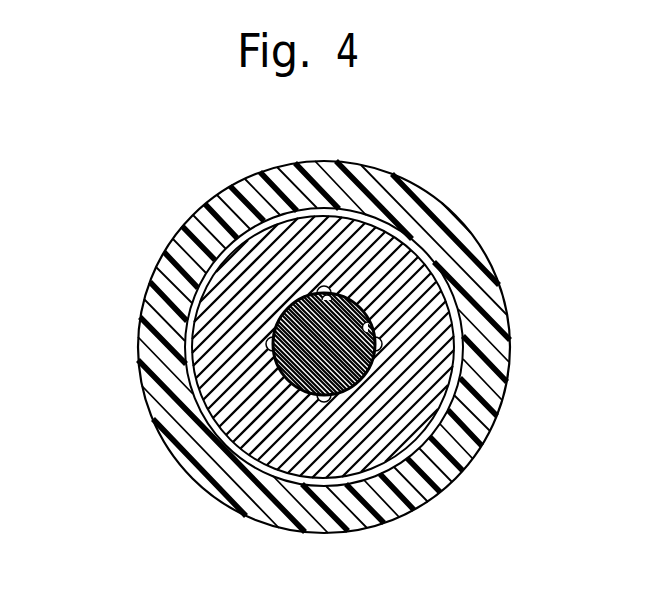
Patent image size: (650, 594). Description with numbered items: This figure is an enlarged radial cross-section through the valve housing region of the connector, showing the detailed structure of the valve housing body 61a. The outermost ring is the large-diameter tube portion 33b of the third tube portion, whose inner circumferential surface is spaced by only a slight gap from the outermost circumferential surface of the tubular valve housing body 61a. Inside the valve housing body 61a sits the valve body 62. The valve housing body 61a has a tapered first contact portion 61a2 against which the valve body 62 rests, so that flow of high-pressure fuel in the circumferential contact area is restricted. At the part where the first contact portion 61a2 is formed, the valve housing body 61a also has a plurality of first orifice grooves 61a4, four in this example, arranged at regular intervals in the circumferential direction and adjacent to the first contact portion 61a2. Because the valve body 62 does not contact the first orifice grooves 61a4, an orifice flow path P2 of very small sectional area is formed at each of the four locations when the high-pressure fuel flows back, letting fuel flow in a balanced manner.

The large-diameter tube portion 33b is at (158, 293).
The valve housing body 61a is at (222, 357).
The first orifice groove 61a4 is at (332, 306).
The first contact portion 61a2 is at (363, 331).
The orifice flow path P2 is at (380, 343).
The valve body 62 is at (340, 383).